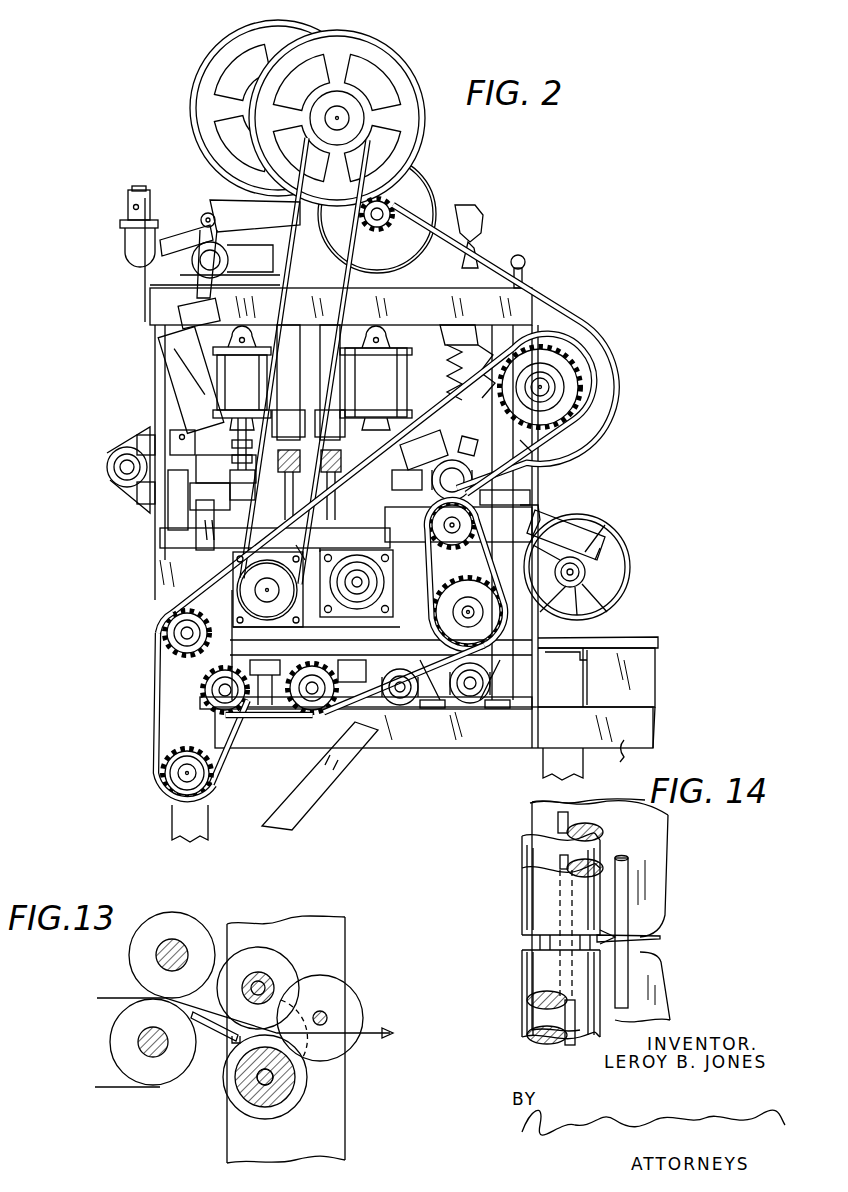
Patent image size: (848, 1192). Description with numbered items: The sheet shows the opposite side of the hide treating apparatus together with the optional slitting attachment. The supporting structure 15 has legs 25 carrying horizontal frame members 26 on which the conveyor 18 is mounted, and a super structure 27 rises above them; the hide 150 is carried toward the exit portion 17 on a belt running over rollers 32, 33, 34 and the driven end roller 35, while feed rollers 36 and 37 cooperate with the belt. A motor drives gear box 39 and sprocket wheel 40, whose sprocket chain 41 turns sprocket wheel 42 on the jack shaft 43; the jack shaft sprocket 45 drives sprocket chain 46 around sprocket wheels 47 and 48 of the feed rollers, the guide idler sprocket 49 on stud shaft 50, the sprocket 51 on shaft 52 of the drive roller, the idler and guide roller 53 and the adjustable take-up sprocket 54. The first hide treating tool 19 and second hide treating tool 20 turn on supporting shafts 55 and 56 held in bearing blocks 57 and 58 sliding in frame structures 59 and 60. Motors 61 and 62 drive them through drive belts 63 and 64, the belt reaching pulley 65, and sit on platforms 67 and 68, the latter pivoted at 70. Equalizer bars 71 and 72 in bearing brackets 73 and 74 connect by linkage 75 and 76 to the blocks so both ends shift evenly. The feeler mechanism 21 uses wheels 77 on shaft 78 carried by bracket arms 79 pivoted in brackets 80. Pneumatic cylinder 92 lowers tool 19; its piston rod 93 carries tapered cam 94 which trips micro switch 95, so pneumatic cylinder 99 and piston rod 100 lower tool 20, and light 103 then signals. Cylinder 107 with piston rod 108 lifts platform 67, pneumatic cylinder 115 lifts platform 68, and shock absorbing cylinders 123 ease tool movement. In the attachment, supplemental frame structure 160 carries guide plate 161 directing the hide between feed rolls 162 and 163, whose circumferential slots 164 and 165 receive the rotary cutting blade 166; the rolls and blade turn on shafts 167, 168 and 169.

In FIG. 2, the supporting structure or frame 15 is at (610, 773).
In FIG. 2, the exit portion 17 is at (122, 644).
In FIG. 2, the conveyor 18 is at (663, 632).
In FIG. 13, the conveyor 18 is at (104, 991).
In FIG. 2, the first hide treating tool 19 is at (268, 634).
In FIG. 2, the second hide treating tool 20 is at (360, 600).
In FIG. 2, the feeler mechanism 21 is at (654, 578).
In FIG. 2, the legs 25 is at (208, 838).
In FIG. 2, the horizontal frame members 26 is at (618, 760).
In FIG. 2, the super structure 27 is at (160, 338).
In FIG. 2, the roller 32 is at (475, 684).
In FIG. 2, the roller 33 is at (412, 703).
In FIG. 2, the roller 34 is at (404, 678).
In FIG. 2, the end roller 35 is at (262, 708).
In FIG. 13, the end roller 35 is at (128, 1062).
In FIG. 2, the feed roller 36 is at (450, 605).
In FIG. 2, the feed roller 37 is at (205, 618).
In FIG. 13, the feed roller 37 is at (188, 922).
In FIG. 2, the gear box 39 is at (436, 205).
In FIG. 2, the sprocket wheel 40 is at (386, 228).
In FIG. 2, the sprocket chain 41 is at (538, 300).
In FIG. 2, the sprocket wheel 42 is at (600, 362).
In FIG. 2, the jack shaft 43 is at (556, 390).
In FIG. 2, the sprocket 45 is at (560, 415).
In FIG. 2, the sprocket chain 46 is at (515, 460).
In FIG. 2, the sprocket wheel 47 is at (494, 616).
In FIG. 2, the sprocket wheel 48 is at (165, 636).
In FIG. 2, the guide idler sprocket 49 is at (216, 773).
In FIG. 2, the stud shaft 50 is at (178, 780).
In FIG. 2, the sprocket 51 is at (210, 710).
In FIG. 2, the shaft 52 is at (214, 690).
In FIG. 2, the idler and guide roller 53 is at (322, 712).
In FIG. 2, the adjustable take-up sprocket 54 is at (480, 527).
In FIG. 2, the supporting shaft 55 is at (267, 590).
In FIG. 2, the supporting shaft 56 is at (352, 620).
In FIG. 2, the bearing block 57 is at (291, 546).
In FIG. 2, the bearing block 58 is at (338, 548).
In FIG. 2, the frame structure 59 is at (404, 570).
In FIG. 2, the frame structure 60 is at (228, 630).
In FIG. 2, the motor 61 is at (390, 62).
In FIG. 2, the motor 62 is at (255, 50).
In FIG. 2, the drive belt 63 is at (364, 177).
In FIG. 2, the drive belt 64 is at (288, 250).
In FIG. 2, the pulley 65 is at (250, 565).
In FIG. 2, the platform 67 is at (222, 200).
In FIG. 2, the platform 68 is at (170, 240).
In FIG. 2, the pivot 70 is at (190, 262).
In FIG. 2, the equalizer bar 71 is at (108, 465).
In FIG. 2, the equalizer bar 72 is at (469, 439).
In FIG. 2, the bearing bracket 73 is at (135, 497).
In FIG. 2, the bearing bracket 74 is at (496, 490).
In FIG. 2, the linkage 75 is at (182, 447).
In FIG. 2, the linkage 76 is at (438, 452).
In FIG. 2, the feeler wheels 77 is at (630, 548).
In FIG. 2, the shaft 78 is at (569, 588).
In FIG. 2, the bracket arms 79 is at (603, 530).
In FIG. 2, the brackets 80 is at (566, 535).
In FIG. 2, the pneumatic cylinder 92 is at (242, 378).
In FIG. 2, the piston rod 93 is at (236, 450).
In FIG. 2, the tapered cam 94 is at (236, 478).
In FIG. 2, the micro switch 95 is at (200, 538).
In FIG. 2, the pneumatic cylinder 99 is at (385, 388).
In FIG. 2, the piston rod 100 is at (420, 465).
In FIG. 2, the light 103 is at (527, 264).
In FIG. 2, the cylinder 107 is at (182, 395).
In FIG. 2, the piston rod 108 is at (196, 303).
In FIG. 2, the pneumatic cylinder 115 is at (470, 365).
In FIG. 2, the shock absorbing cylinders 123 is at (318, 385).
In FIG. 13, the hide 150 is at (192, 1016).
In FIG. 13, the supplemental frame structure 160 is at (338, 924).
In FIG. 14, the supplemental frame structure 160 is at (601, 916).
In FIG. 13, the guide plate 161 is at (212, 1030).
In FIG. 13, the feed roll 162 is at (262, 958).
In FIG. 14, the feed roll 162 is at (535, 898).
In FIG. 13, the feed roll 163 is at (308, 1085).
In FIG. 13, the circumferential slot 164 is at (292, 972).
In FIG. 14, the circumferential slot 164 is at (530, 942).
In FIG. 13, the circumferential slot 165 is at (290, 1103).
In FIG. 13, the rotary cutting blade 166 is at (340, 990).
In FIG. 14, the rotary cutting blade 166 is at (667, 938).
In FIG. 13, the shaft 167 is at (255, 982).
In FIG. 13, the shaft 168 is at (262, 1088).
In FIG. 13, the shaft 169 is at (328, 1013).
In FIG. 14, the shaft 169 is at (636, 900).